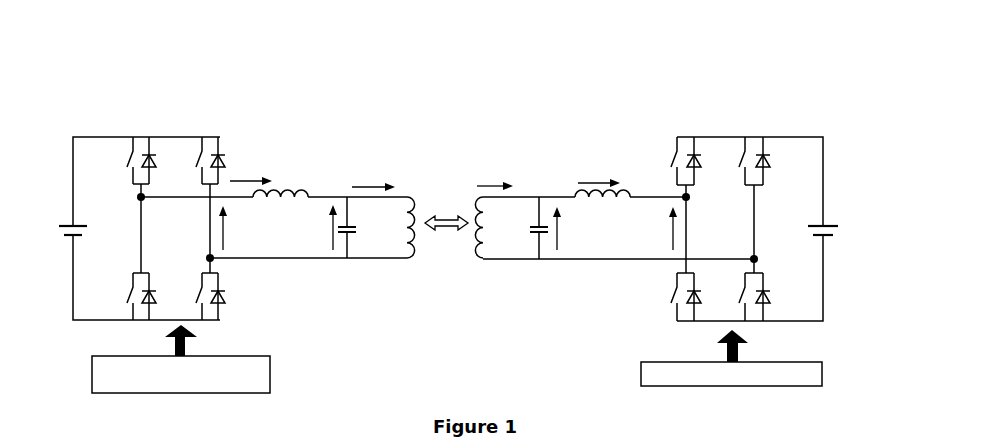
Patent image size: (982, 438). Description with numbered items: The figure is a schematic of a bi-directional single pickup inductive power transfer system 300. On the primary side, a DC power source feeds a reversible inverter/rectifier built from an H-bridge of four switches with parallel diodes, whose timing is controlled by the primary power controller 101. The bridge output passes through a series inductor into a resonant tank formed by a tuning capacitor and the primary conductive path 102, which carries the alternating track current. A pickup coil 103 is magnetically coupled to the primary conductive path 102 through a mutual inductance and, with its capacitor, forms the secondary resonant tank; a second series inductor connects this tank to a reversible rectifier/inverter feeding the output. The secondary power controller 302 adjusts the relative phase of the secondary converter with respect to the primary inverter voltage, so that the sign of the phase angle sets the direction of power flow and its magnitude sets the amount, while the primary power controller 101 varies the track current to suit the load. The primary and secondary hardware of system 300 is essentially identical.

The bi-directional single pickup inductive power transfer system 300 is at (366, 103).
The primary power controller 101 is at (262, 378).
The primary conductive path 102 is at (412, 262).
The pickup coil 103 is at (477, 258).
The secondary power controller 302 is at (652, 383).